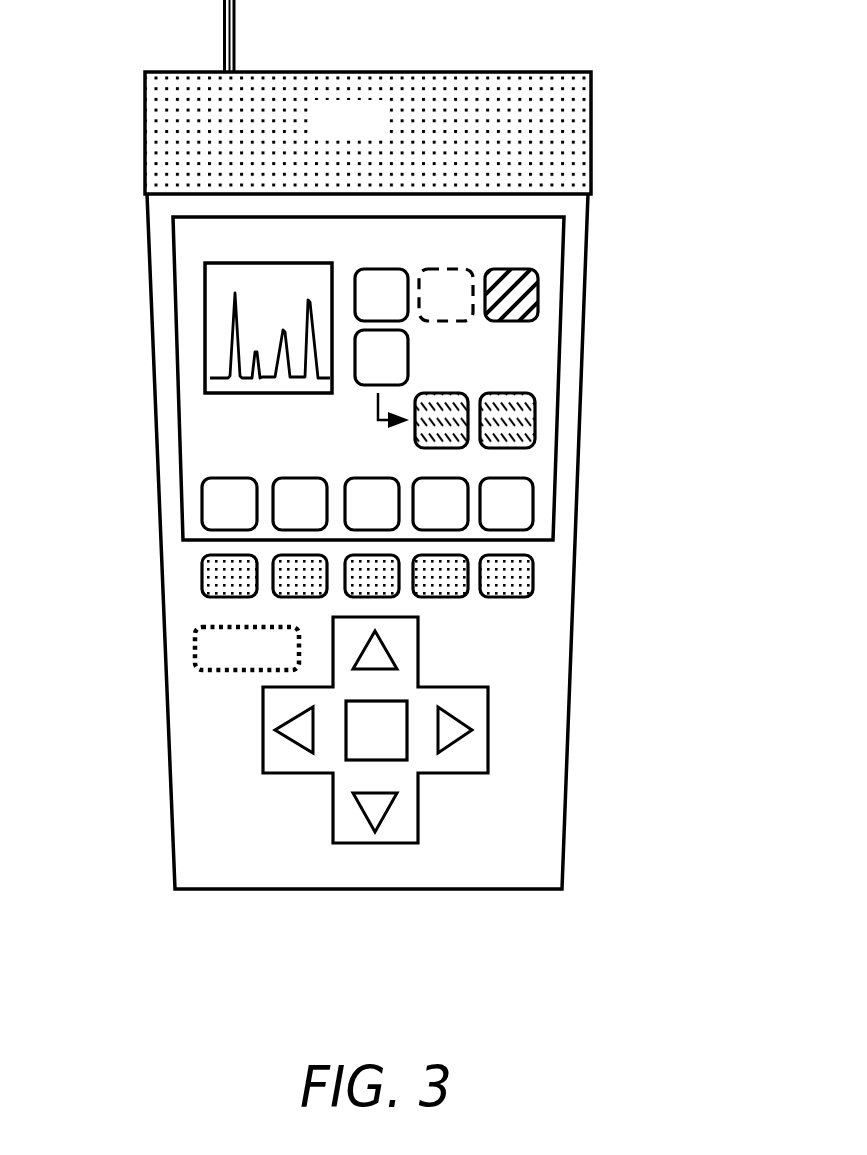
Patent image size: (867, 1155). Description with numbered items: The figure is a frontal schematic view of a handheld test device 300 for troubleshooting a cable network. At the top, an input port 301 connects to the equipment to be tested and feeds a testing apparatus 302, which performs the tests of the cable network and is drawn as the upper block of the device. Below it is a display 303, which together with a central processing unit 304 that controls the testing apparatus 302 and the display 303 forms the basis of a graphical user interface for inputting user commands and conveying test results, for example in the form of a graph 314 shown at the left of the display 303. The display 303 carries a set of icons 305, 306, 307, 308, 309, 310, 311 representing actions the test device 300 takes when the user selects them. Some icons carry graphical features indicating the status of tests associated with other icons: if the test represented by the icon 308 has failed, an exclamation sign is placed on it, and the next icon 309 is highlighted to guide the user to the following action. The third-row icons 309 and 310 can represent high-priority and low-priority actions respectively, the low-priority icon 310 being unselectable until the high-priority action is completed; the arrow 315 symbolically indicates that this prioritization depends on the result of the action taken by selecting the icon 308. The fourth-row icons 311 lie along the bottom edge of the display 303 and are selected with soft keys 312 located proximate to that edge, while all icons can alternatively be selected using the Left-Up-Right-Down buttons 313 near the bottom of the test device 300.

The test device 300 is at (173, 847).
The input port 301 is at (234, 25).
The testing apparatus 302 is at (373, 136).
The display 303 is at (178, 428).
The central processing unit (CPU) 304 is at (197, 645).
The icon 305 is at (364, 268).
The icon 306 is at (465, 268).
The icon 307 is at (540, 283).
The icon 308 is at (409, 342).
The third-row icon 309 is at (441, 403).
The third-row icon 310 is at (536, 403).
The fourth-row icons 311 is at (212, 508).
The soft keys 312 is at (527, 570).
The Left-Up-Right-Down buttons 313 is at (418, 805).
The graph 314 is at (205, 313).
The arrow 315 is at (378, 407).